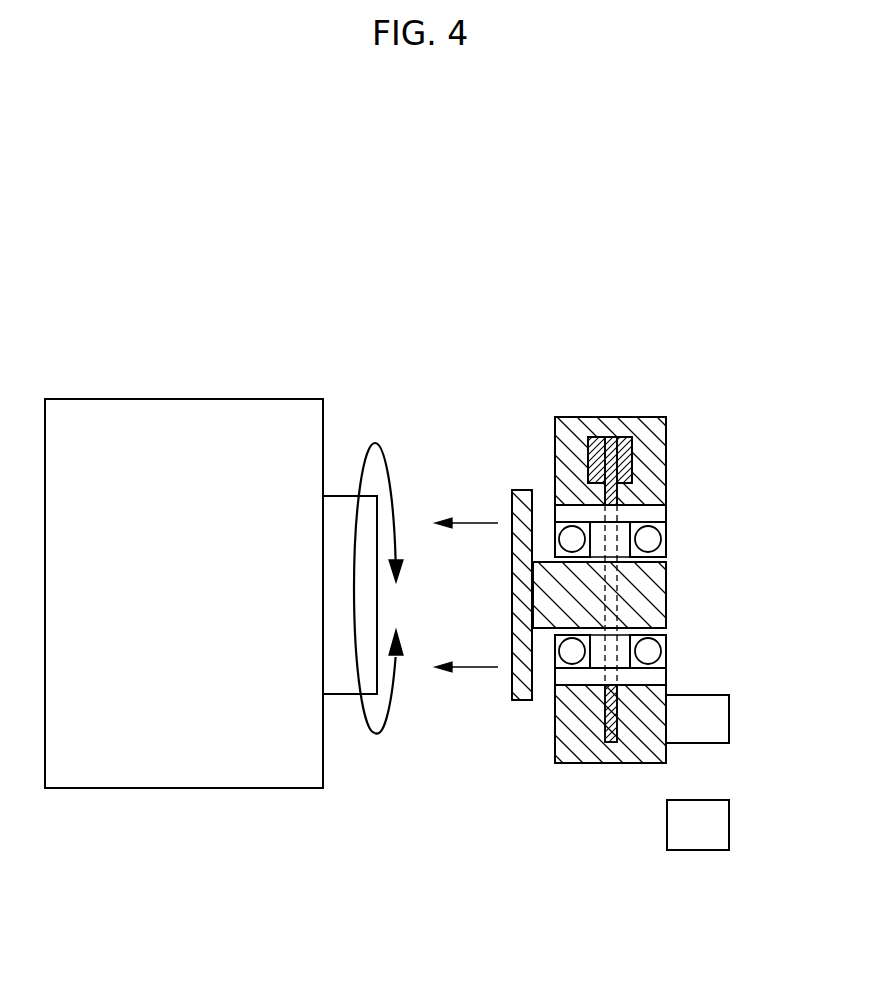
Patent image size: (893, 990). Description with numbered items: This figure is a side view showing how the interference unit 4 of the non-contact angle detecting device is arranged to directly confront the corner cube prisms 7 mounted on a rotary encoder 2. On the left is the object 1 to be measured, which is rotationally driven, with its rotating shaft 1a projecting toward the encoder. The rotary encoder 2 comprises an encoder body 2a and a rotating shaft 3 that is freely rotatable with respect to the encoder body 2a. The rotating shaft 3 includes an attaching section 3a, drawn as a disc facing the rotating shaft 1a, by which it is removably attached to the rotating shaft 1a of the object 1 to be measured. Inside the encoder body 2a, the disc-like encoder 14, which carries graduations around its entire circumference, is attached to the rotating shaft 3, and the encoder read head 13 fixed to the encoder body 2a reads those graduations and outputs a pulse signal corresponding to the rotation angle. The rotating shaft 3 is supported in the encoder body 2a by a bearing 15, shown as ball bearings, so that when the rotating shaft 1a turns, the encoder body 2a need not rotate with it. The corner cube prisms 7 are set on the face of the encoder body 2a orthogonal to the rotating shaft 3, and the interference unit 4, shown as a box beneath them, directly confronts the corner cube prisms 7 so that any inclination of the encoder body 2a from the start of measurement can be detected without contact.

The object to be measured 1 is at (123, 415).
The rotating shaft of the object to be measured 1a is at (337, 495).
The rotary encoder 2 is at (734, 285).
The encoder body 2a is at (558, 738).
The rotating shaft 3 is at (650, 583).
The attaching section 3a is at (522, 490).
The interference unit 4 is at (667, 827).
The corner cube prisms 7 is at (703, 695).
The encoder read head 13 is at (636, 452).
The encoder 14 is at (612, 470).
The bearing 15 is at (572, 536).